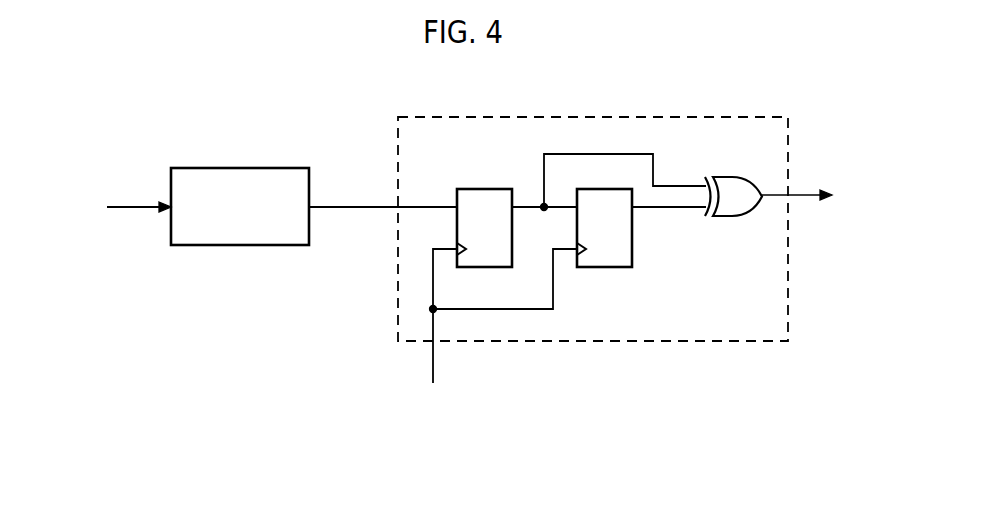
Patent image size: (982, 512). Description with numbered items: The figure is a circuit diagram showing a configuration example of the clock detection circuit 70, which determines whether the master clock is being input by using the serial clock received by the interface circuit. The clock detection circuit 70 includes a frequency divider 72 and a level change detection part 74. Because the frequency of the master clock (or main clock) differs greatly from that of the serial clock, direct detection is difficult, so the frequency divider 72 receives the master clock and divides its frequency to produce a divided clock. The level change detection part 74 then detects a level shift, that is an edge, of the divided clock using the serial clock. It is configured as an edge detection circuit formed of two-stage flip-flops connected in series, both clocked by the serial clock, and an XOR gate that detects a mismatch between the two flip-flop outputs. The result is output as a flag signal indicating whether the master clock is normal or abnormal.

The clock detection circuit 70 is at (480, 478).
The frequency divider 72 is at (243, 168).
The level change detection part 74 is at (610, 117).